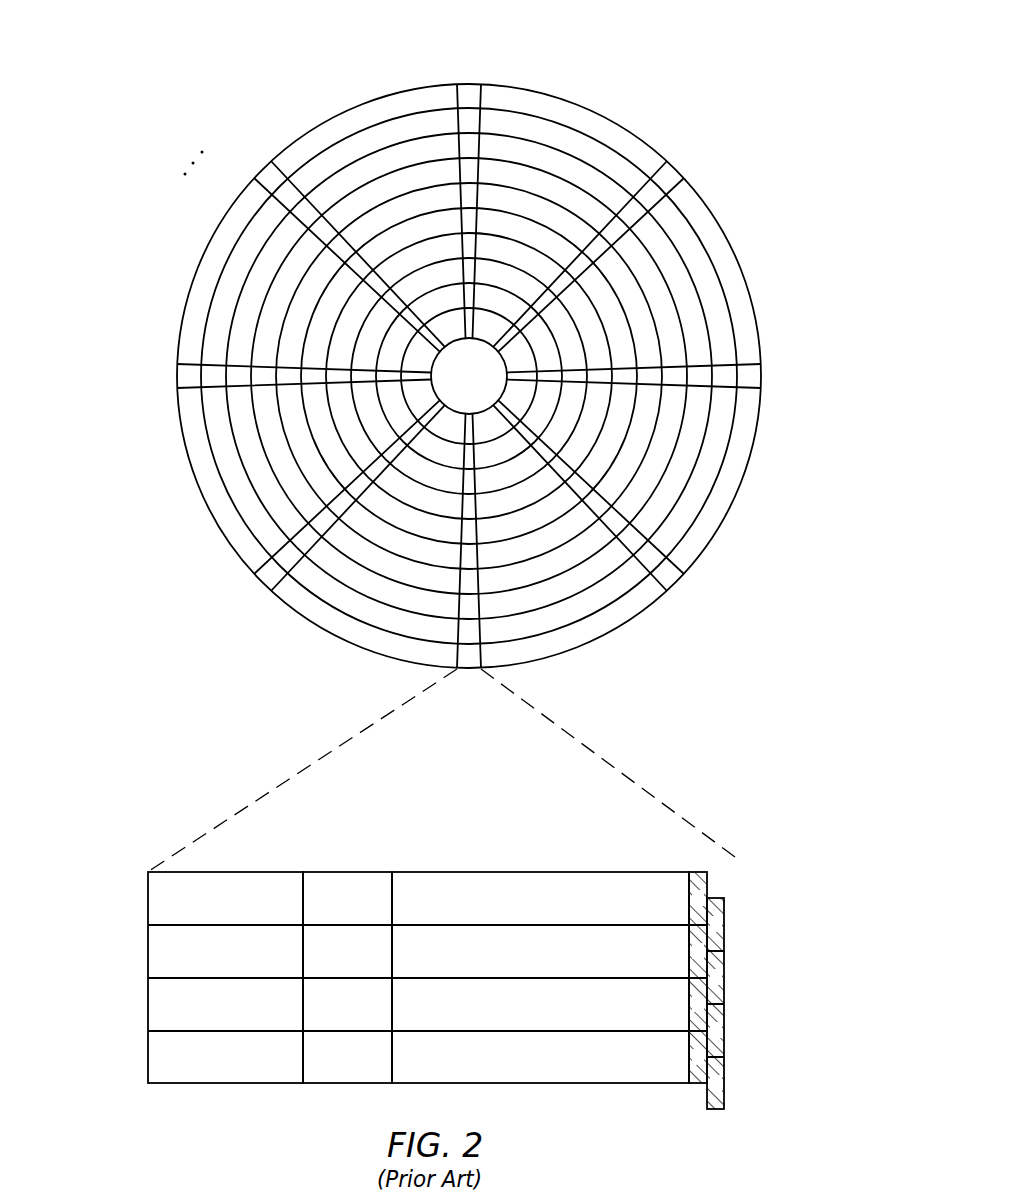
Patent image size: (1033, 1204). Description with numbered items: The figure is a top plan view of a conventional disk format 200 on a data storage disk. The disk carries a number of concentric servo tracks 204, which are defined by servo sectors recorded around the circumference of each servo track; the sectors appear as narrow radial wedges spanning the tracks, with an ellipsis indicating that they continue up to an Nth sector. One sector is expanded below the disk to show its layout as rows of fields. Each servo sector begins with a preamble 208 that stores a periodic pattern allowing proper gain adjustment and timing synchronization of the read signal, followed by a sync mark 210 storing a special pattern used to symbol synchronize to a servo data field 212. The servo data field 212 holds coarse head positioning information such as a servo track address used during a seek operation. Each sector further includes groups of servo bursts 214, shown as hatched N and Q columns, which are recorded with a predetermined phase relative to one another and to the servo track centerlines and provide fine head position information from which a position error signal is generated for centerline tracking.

The disk format 200 is at (441, 451).
The servo tracks 204 is at (537, 126).
The preamble 208 is at (233, 872).
The sync mark 210 is at (353, 872).
The servo data field 212 is at (543, 872).
The servo bursts 214 is at (720, 874).